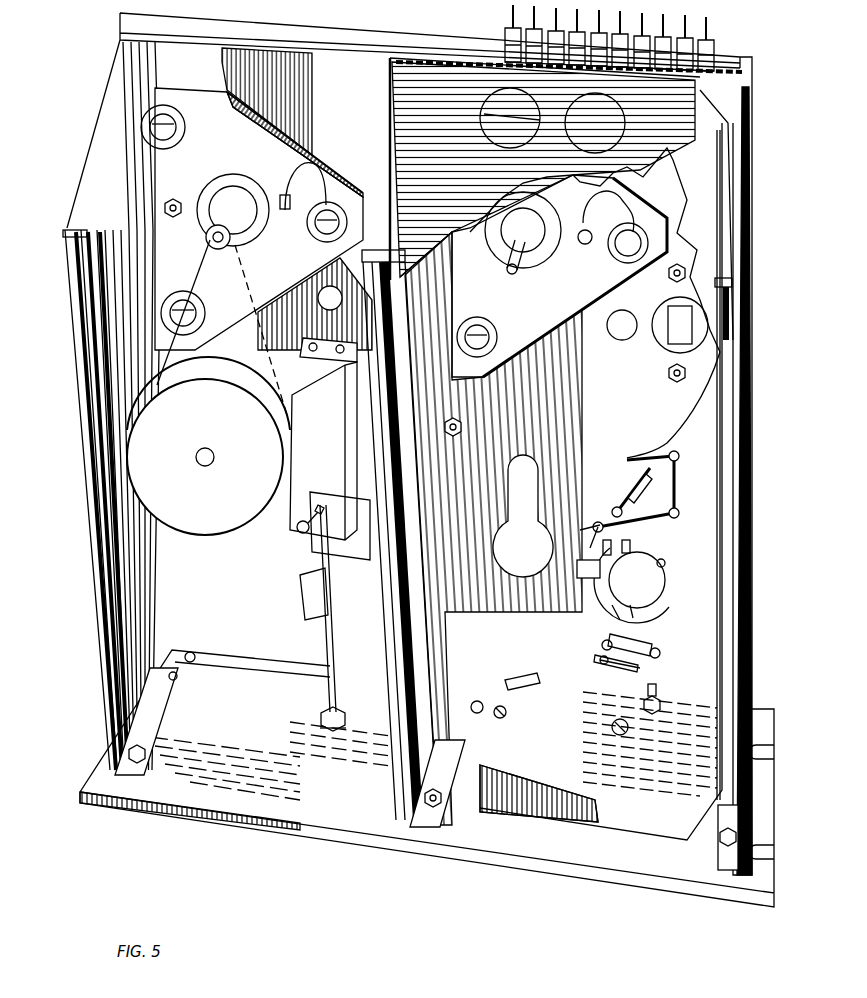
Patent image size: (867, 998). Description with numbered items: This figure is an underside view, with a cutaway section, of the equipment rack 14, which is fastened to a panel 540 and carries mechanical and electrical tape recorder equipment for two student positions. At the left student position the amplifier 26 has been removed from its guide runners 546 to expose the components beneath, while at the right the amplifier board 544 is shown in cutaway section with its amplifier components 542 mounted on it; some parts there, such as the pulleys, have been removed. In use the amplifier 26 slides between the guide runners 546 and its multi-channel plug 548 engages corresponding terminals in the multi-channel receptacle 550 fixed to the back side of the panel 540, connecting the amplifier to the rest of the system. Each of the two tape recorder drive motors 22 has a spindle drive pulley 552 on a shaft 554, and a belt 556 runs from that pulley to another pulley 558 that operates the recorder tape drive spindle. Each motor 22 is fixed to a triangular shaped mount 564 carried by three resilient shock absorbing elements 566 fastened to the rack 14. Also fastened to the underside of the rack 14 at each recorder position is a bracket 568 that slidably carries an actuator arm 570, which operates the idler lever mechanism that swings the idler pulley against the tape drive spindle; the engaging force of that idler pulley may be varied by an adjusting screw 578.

The equipment rack 14 is at (320, 62).
The tape recorder drive motor 22 is at (303, 127).
The amplifier 26 is at (490, 449).
The panel 540 is at (427, 778).
The amplifier components 542 is at (668, 612).
The amplifier board 544 is at (720, 188).
The guide runners 546 is at (70, 215).
The multi-channel plug 548 is at (472, 800).
The multi-channel receptacle 550 is at (543, 820).
The spindle drive pulley 552 is at (230, 248).
The shaft 554 is at (515, 278).
The belt 556 is at (263, 350).
The pulley 558 is at (232, 530).
The triangular shaped mount 564 is at (206, 104).
The resilient shock absorbing element 566 is at (186, 130).
The bracket 568 is at (330, 479).
The actuator arm 570 is at (333, 592).
The adjusting screw 578 is at (303, 535).